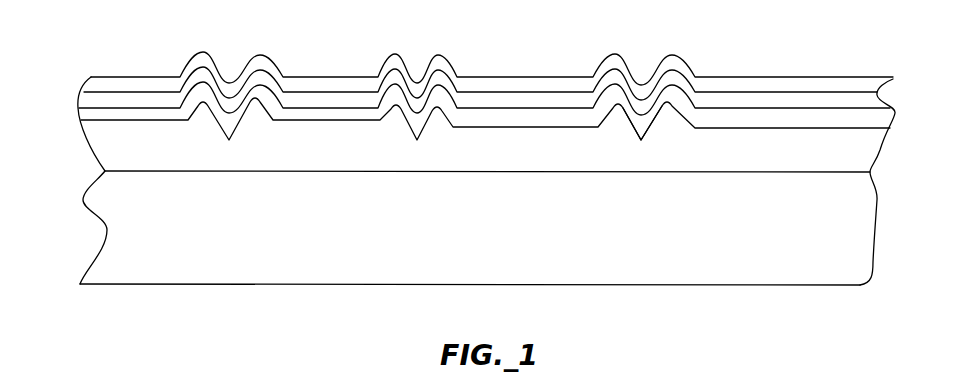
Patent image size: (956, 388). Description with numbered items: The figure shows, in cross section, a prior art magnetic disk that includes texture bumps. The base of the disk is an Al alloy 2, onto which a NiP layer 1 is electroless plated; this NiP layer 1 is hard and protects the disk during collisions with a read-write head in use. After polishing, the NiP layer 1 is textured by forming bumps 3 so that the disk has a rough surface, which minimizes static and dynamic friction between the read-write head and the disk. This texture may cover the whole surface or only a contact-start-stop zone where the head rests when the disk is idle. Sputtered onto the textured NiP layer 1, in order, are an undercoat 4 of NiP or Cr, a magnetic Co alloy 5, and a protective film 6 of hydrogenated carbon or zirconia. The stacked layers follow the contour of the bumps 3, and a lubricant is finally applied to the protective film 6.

The NiP layer 1 is at (868, 150).
The Al alloy 2 is at (868, 202).
The bumps 3 is at (641, 140).
The undercoat 4 is at (870, 122).
The magnetic Co alloy 5 is at (827, 100).
The protective film 6 is at (735, 85).